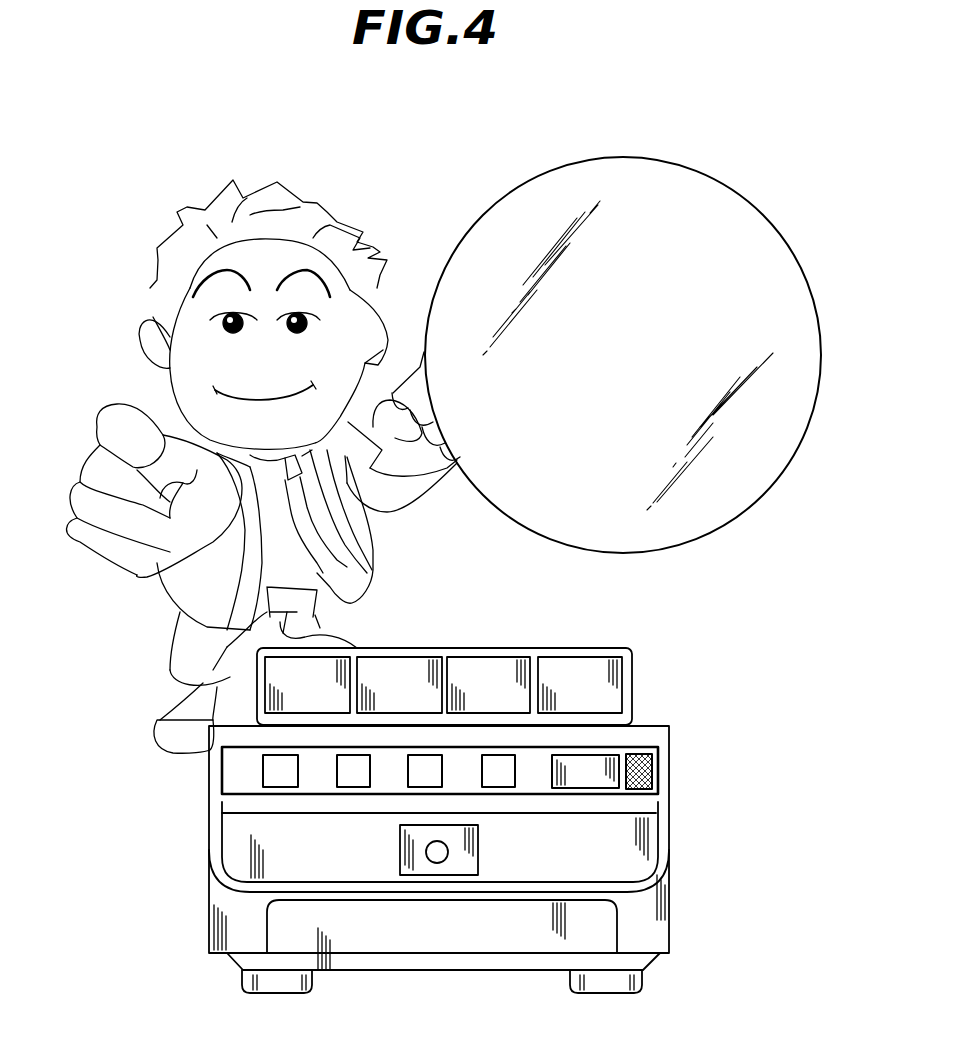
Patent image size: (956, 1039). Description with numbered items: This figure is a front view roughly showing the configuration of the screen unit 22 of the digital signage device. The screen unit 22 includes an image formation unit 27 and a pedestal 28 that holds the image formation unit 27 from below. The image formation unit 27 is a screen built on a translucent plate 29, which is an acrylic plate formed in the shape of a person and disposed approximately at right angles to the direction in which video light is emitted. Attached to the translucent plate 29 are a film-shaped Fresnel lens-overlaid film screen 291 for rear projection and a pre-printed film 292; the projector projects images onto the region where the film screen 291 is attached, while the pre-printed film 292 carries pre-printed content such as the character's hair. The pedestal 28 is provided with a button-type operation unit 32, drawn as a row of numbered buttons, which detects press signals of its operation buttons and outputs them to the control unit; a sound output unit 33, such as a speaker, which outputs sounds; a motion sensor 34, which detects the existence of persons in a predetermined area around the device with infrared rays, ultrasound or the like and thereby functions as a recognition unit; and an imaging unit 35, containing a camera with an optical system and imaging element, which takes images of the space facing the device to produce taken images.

The screen unit 22 is at (305, 110).
The image formation unit 27 is at (105, 290).
The pedestal 28 is at (685, 846).
The translucent plate 29 is at (755, 225).
The film screen 291 is at (620, 190).
The pre-printed film 292 is at (310, 218).
The operation unit 32 is at (482, 777).
The sound output unit 33 is at (648, 782).
The motion sensor 34 is at (598, 775).
The imaging unit 35 is at (430, 870).